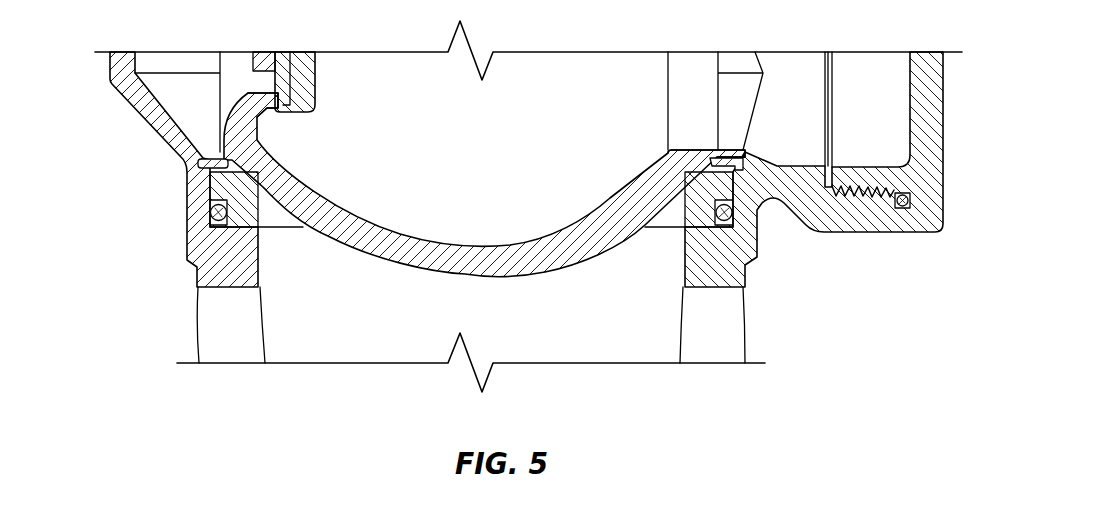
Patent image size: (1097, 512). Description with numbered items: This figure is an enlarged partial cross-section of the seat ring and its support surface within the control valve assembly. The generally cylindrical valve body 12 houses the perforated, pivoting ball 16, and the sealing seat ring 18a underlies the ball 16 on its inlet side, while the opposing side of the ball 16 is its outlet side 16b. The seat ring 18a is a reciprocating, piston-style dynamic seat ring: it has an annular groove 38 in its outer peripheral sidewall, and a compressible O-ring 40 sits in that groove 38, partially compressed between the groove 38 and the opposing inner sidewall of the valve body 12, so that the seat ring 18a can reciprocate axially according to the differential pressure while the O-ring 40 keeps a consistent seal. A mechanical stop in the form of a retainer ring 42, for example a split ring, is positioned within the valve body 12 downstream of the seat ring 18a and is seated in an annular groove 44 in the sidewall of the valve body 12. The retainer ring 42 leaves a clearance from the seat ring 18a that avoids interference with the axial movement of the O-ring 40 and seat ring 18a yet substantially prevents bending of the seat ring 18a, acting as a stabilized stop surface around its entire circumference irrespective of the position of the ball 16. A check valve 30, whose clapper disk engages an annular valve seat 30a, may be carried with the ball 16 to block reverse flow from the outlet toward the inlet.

The valve body 12 is at (104, 64).
The ball 16 is at (508, 276).
The outlet side of the ball 16b is at (692, 148).
The sealing seat ring 18a is at (250, 209).
The check valve 30 is at (326, 86).
The valve seat 30a is at (262, 83).
The annular groove 38 is at (210, 186).
The O-ring 40 is at (214, 212).
The retainer ring 42 is at (215, 158).
The annular groove 44 is at (727, 156).